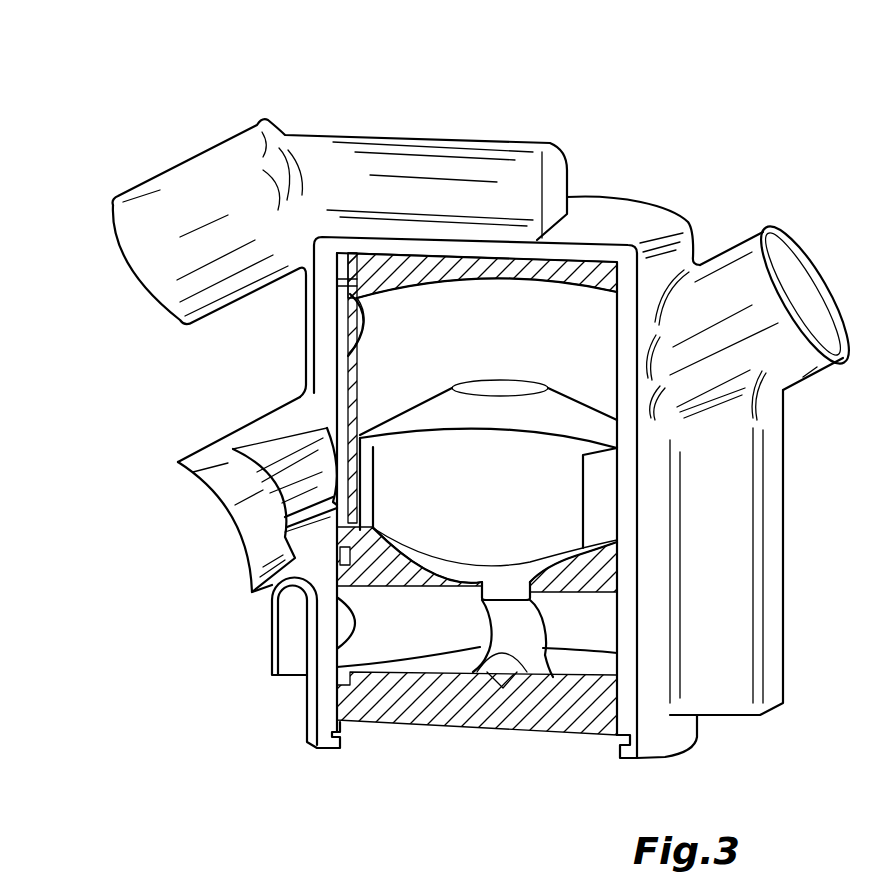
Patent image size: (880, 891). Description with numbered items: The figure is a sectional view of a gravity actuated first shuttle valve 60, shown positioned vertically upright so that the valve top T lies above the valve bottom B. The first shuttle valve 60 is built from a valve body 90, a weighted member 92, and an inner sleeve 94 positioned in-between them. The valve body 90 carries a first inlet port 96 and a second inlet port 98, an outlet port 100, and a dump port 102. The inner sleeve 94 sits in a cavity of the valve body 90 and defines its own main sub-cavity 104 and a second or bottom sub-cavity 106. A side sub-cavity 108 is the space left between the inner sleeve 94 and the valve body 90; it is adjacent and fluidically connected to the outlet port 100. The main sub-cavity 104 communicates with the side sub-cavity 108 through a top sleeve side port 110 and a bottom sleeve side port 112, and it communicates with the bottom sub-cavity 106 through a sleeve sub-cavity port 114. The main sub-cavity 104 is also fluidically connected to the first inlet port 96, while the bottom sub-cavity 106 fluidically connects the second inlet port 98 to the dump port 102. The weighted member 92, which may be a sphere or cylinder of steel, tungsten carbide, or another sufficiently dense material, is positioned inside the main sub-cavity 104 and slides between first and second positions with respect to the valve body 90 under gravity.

The first shuttle valve 60 is at (698, 117).
The valve body 90 is at (308, 720).
The weighted member 92 is at (496, 507).
The inner sleeve 94 is at (413, 718).
The first inlet port 96 is at (113, 232).
The second inlet port 98 is at (826, 287).
The outlet port 100 is at (220, 490).
The dump port 102 is at (343, 630).
The main sub-cavity 104 is at (513, 343).
The bottom sub-cavity 106 is at (427, 631).
The side sub-cavity 108 is at (345, 308).
The top sleeve side port 110 is at (353, 343).
The bottom sleeve side port 112 is at (285, 537).
The sleeve sub-cavity port 114 is at (512, 590).
The valve top T is at (610, 222).
The valve bottom B is at (670, 753).